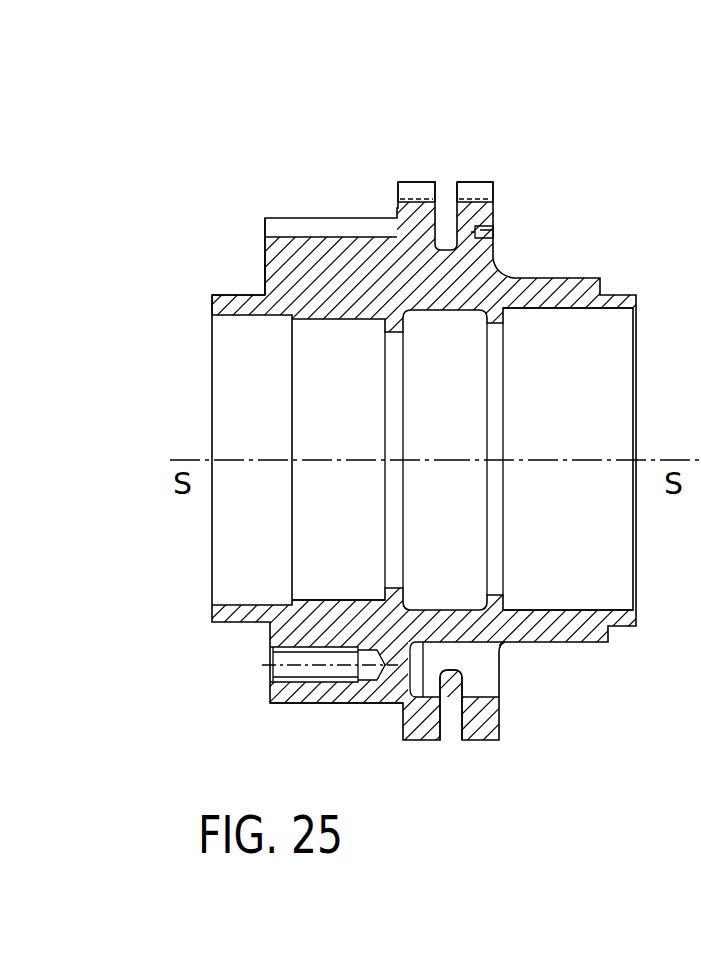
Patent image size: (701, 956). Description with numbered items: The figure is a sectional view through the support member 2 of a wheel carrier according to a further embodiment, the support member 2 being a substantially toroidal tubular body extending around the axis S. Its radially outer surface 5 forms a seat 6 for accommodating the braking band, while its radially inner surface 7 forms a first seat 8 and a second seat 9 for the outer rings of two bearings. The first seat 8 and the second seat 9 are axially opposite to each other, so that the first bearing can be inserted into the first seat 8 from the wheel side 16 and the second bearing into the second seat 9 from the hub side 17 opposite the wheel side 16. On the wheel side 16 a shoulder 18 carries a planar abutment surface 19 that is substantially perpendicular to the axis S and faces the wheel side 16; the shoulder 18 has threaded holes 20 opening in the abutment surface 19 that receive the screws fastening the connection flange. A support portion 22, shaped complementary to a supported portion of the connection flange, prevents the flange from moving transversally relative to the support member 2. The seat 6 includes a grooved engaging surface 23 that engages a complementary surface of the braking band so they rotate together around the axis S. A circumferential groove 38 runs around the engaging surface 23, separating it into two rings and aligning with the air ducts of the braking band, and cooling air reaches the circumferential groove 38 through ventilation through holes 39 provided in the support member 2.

The support member 2 is at (430, 76).
The radially outer surface 5 is at (335, 216).
The seat 6 is at (474, 187).
The radially inner surface 7 is at (570, 314).
The first seat 8 is at (336, 597).
The second seat 9 is at (567, 606).
The wheel side 16 is at (166, 456).
The hub side 17 is at (700, 452).
The shoulder 18 is at (263, 257).
The abutment surface 19 is at (262, 271).
The threaded holes 20 is at (273, 664).
The support portion 22 is at (212, 297).
The engaging surface 23 is at (418, 187).
The circumferential groove 38 is at (450, 722).
The ventilation through holes 39 is at (478, 672).